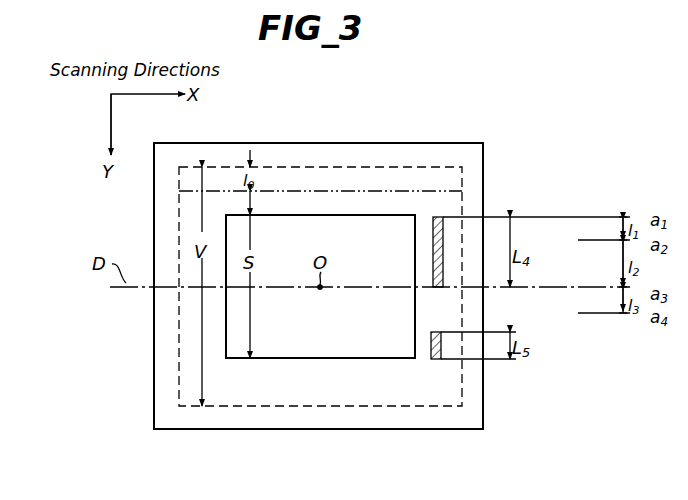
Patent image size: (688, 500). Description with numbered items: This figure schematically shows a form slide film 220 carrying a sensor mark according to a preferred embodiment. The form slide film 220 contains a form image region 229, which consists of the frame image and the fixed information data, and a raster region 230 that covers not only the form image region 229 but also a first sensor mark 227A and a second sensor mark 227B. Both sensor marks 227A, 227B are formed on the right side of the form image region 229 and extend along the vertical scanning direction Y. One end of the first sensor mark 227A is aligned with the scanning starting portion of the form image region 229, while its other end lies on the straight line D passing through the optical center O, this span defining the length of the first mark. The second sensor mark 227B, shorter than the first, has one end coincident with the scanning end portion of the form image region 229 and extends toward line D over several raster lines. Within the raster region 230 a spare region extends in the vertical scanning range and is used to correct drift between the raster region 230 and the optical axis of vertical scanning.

The form slide film 220 is at (426, 113).
The first sensor mark 227A is at (438, 235).
The second sensor mark 227B is at (437, 345).
The form image region 229 is at (340, 340).
The raster region 230 is at (258, 380).